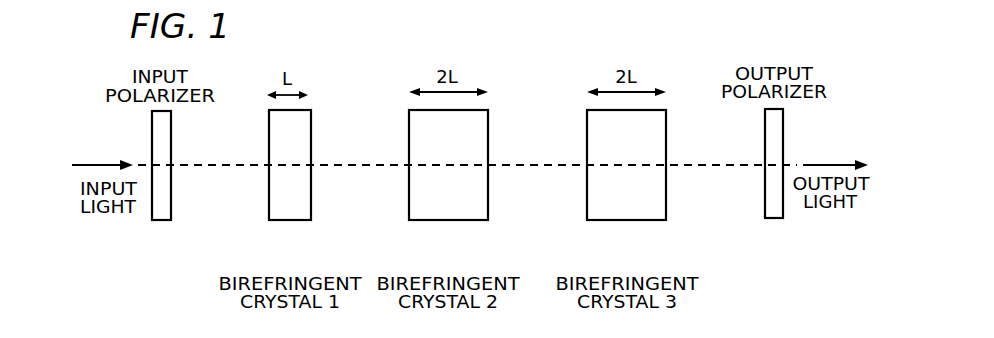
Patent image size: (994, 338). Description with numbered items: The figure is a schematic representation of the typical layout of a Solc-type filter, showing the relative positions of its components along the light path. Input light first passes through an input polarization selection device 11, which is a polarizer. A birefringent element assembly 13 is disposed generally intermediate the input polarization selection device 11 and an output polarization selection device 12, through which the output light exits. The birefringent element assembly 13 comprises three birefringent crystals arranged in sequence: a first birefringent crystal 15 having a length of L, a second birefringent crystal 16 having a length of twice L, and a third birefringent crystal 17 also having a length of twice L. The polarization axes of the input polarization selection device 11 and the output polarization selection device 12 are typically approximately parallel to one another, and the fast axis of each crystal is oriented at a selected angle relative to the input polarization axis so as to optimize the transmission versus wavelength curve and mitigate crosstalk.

The input polarization selection device 11 is at (161, 220).
The output polarization selection device 12 is at (774, 218).
The birefringent element assembly 13 is at (268, 43).
The first birefringent crystal 15 is at (290, 220).
The second birefringent crystal 16 is at (450, 220).
The third birefringent crystal 17 is at (625, 220).